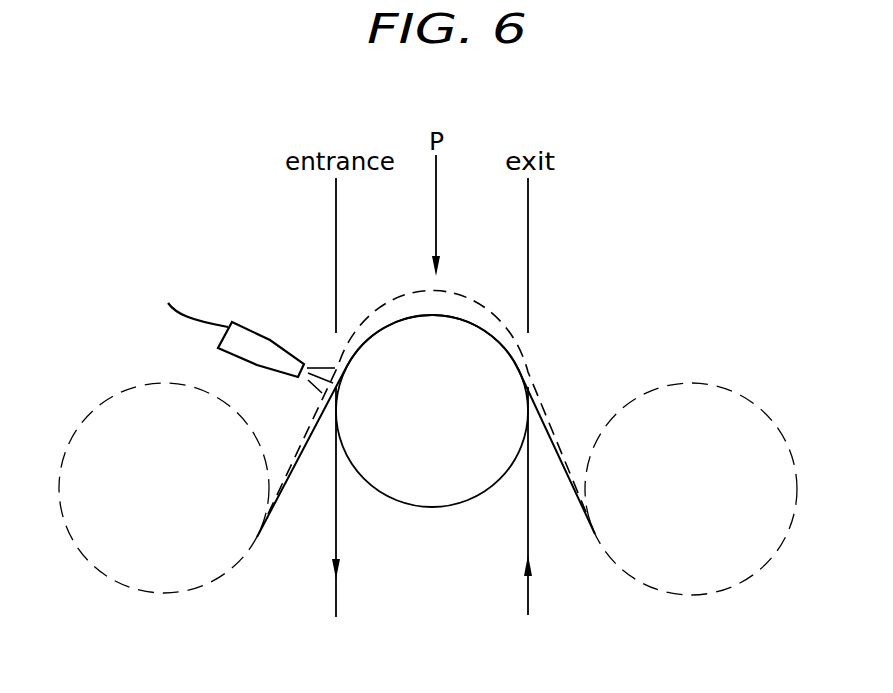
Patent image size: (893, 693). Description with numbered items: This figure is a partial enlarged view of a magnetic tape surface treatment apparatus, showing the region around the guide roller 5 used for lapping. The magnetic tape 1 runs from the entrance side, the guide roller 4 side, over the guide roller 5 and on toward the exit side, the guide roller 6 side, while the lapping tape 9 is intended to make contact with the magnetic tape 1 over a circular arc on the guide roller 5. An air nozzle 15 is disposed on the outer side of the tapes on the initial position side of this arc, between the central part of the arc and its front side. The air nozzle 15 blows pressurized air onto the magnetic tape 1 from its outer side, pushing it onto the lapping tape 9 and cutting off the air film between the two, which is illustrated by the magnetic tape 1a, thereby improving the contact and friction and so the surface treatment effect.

The magnetic tape 1 is at (558, 473).
The magnetic tape 1a is at (526, 350).
The guide roller 4 is at (168, 575).
The guide roller 5 is at (467, 485).
The guide roller 6 is at (684, 390).
The lapping tape 9 is at (337, 525).
The air nozzle 15 is at (256, 338).